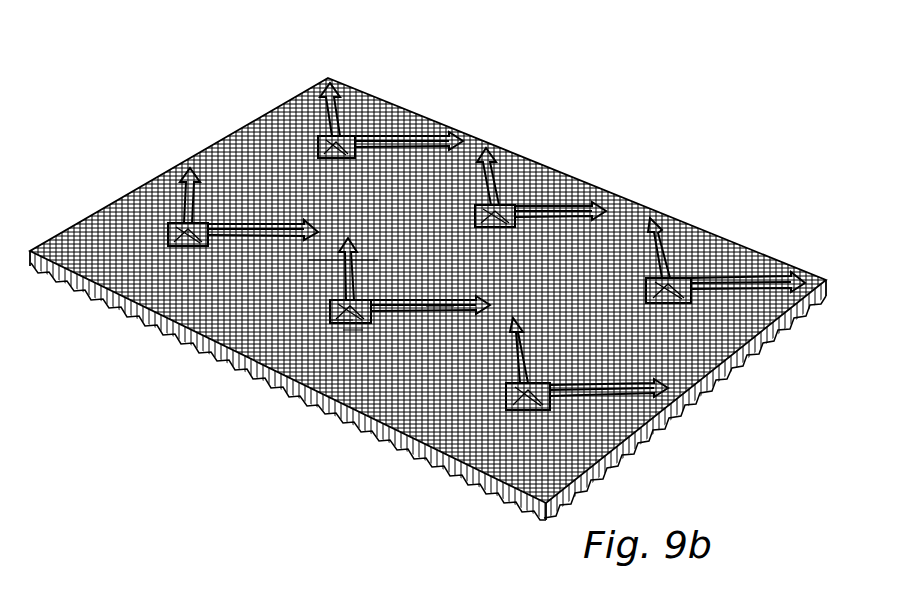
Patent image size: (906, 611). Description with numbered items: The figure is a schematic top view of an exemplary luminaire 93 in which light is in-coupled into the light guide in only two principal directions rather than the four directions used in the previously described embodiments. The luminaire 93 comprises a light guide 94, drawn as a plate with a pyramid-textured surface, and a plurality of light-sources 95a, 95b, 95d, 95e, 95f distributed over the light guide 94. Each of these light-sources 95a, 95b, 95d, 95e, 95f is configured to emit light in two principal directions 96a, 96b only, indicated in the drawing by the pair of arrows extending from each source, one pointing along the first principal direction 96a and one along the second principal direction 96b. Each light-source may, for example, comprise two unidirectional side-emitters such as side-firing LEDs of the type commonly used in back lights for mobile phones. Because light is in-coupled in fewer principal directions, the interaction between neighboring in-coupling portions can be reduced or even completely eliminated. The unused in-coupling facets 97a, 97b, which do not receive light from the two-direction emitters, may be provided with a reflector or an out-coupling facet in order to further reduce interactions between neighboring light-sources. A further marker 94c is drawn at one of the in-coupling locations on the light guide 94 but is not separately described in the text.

The luminaire 93 is at (653, 127).
The light guide 94 is at (740, 348).
The orientation marker 94c is at (662, 290).
The light-source 95a is at (338, 130).
The light-source 95b is at (480, 213).
The light-source 95d is at (177, 232).
The light-source 95e is at (327, 308).
The light-source 95f is at (545, 393).
The principal direction 96a is at (337, 256).
The principal direction 96b is at (431, 305).
The unused in-coupling facet 97a is at (333, 312).
The unused in-coupling facet 97b is at (343, 327).